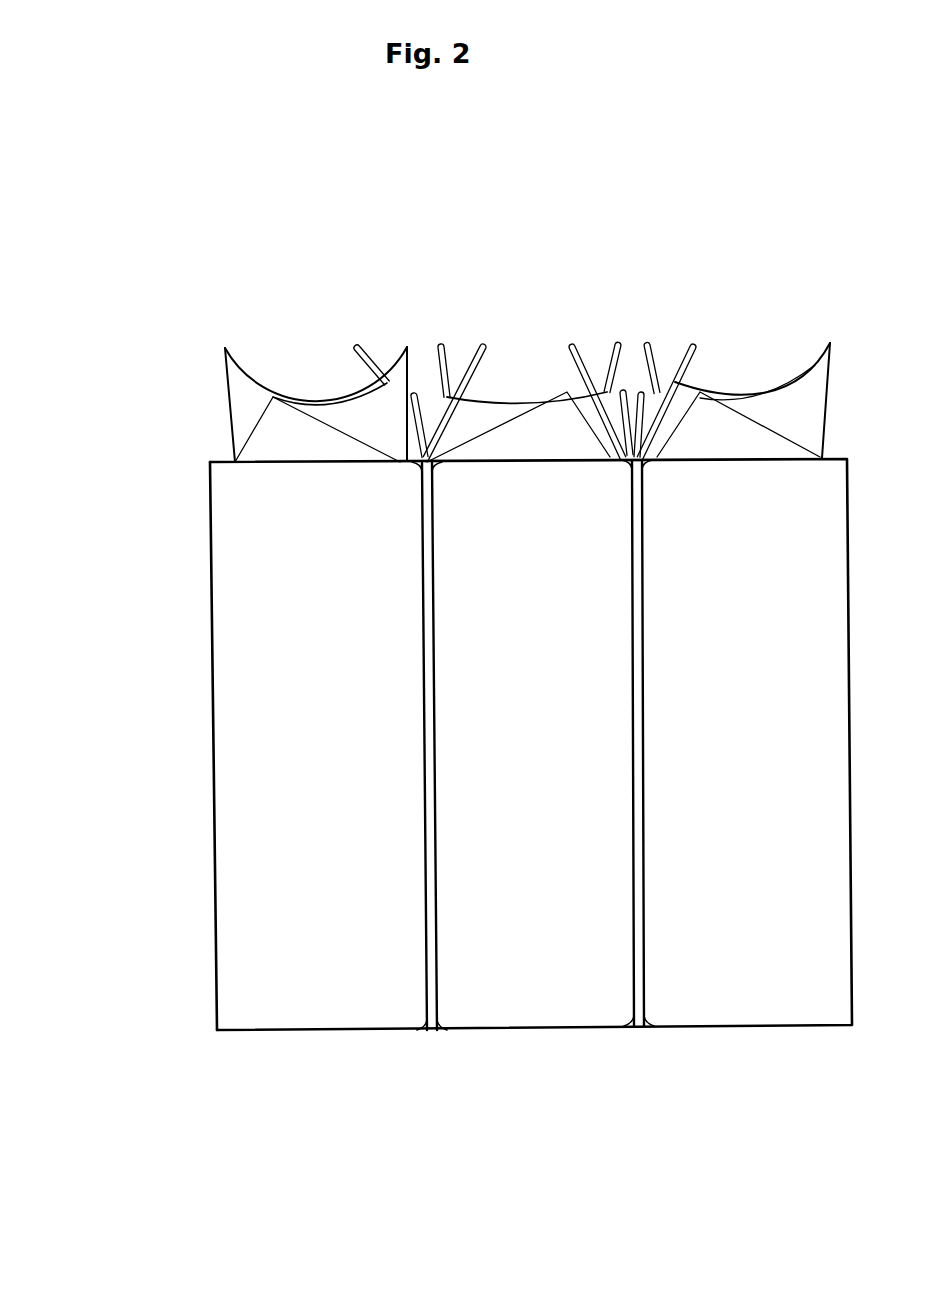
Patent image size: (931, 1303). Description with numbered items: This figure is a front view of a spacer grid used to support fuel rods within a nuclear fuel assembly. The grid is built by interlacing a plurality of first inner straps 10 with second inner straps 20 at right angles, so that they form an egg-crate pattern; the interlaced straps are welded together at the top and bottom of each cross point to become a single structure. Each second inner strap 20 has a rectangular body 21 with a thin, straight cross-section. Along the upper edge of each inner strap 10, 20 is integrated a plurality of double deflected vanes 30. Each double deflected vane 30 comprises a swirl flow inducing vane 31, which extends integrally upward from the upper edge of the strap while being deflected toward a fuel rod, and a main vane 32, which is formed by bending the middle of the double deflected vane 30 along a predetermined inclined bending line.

The first inner strap 10 is at (212, 607).
The second inner strap 20 is at (637, 883).
The rectangular body 21 is at (130, 746).
The double deflected vane 30 is at (527, 299).
The swirl flow inducing vane 31 is at (290, 433).
The main vane 32 is at (400, 350).